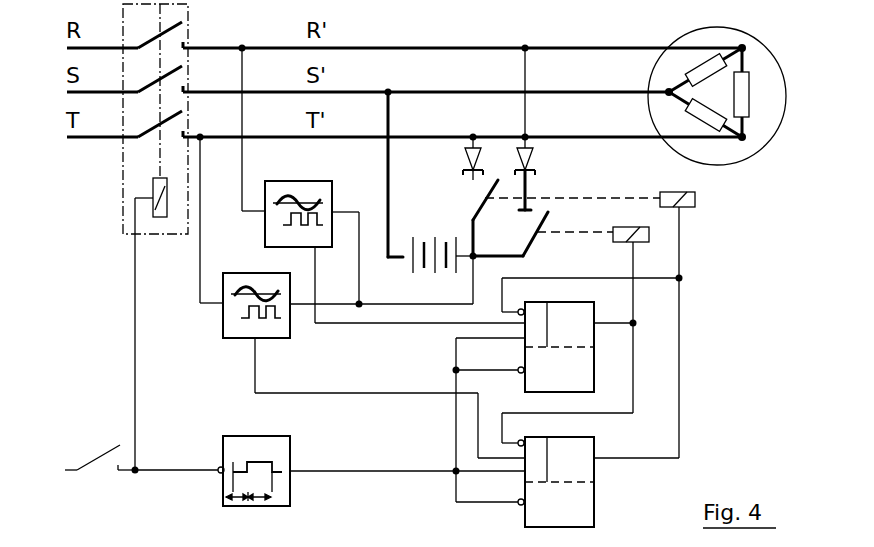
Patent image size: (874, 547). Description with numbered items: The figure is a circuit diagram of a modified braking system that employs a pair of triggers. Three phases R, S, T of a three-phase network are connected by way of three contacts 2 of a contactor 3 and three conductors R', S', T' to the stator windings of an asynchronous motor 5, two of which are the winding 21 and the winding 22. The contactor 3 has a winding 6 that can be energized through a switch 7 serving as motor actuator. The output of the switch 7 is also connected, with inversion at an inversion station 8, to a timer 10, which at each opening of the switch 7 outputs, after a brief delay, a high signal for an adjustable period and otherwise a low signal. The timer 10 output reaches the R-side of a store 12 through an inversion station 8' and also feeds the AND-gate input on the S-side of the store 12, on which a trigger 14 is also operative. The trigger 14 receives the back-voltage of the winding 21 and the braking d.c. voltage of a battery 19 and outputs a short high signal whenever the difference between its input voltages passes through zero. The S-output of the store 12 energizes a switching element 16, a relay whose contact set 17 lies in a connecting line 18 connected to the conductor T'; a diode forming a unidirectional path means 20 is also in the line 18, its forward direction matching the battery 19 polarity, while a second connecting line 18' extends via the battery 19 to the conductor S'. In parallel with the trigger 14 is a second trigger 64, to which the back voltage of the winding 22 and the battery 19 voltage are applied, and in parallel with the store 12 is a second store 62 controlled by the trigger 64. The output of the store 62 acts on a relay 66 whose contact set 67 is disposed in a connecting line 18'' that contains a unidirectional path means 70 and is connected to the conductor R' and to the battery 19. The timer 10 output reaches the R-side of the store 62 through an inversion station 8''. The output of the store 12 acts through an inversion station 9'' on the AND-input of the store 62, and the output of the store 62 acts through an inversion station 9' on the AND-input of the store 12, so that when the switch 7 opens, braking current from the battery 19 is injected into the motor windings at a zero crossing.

The contacts 2 is at (152, 38).
The contactor 3 is at (190, 18).
The asynchronous motor 5 is at (713, 98).
The winding 6 is at (154, 188).
The switch 7 is at (100, 455).
The inversion station 8 is at (179, 484).
The inversion station 8' is at (490, 517).
The inversion station 8'' is at (490, 384).
The inversion station 9' is at (514, 429).
The inversion station 9'' is at (517, 296).
The timer 10 is at (251, 436).
The store 12 is at (594, 500).
The trigger 14 is at (223, 322).
The switching element 16 is at (696, 200).
The contact set 17 is at (480, 206).
The connecting line 18 is at (497, 262).
The connecting line 18' is at (373, 173).
The connecting line 18'' is at (557, 190).
The battery 19 is at (436, 247).
The unidirectional path means 20 is at (465, 160).
The winding 21 is at (703, 124).
The winding 22 is at (697, 67).
The second store 62 is at (594, 340).
The second trigger 64 is at (265, 228).
The relay 66 is at (650, 235).
The contact set 67 is at (524, 255).
The unidirectional path means 70 is at (535, 152).